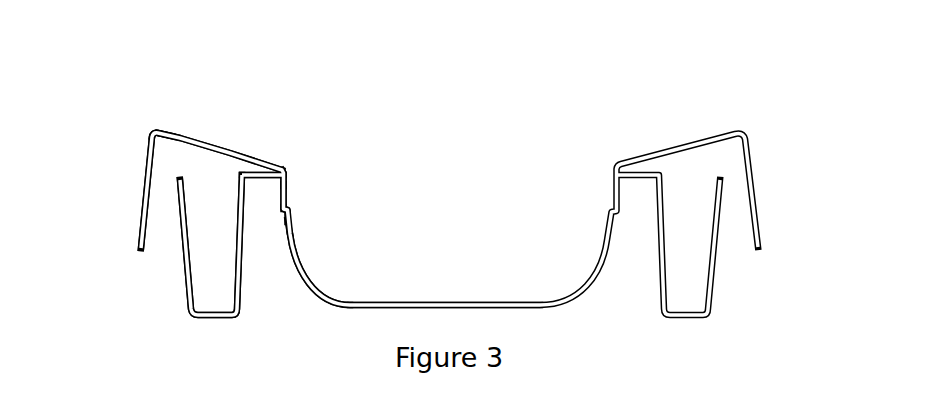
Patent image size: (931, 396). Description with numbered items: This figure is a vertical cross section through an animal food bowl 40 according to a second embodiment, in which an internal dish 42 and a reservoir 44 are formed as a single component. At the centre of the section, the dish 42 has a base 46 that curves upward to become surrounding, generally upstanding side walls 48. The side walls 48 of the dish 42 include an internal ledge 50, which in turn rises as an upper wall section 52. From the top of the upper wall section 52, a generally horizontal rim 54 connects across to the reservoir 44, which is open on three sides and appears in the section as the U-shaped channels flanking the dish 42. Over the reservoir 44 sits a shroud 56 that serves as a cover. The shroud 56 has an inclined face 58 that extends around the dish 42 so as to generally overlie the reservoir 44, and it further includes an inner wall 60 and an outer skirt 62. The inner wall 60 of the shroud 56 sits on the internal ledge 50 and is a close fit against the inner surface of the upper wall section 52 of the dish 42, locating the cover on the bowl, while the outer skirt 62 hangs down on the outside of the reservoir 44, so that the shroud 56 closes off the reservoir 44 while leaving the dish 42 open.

The animal food bowl 40 is at (514, 119).
The internal dish 42 is at (318, 271).
The reservoir 44 is at (214, 263).
The base 46 is at (367, 304).
The side walls 48 is at (291, 235).
The internal ledge 50 is at (288, 206).
The upper wall section 52 is at (291, 196).
The horizontal rim 54 is at (258, 180).
The shroud 56 is at (177, 121).
The inclined face 58 is at (238, 152).
The inner wall 60 is at (285, 182).
The outer skirt 62 is at (150, 172).